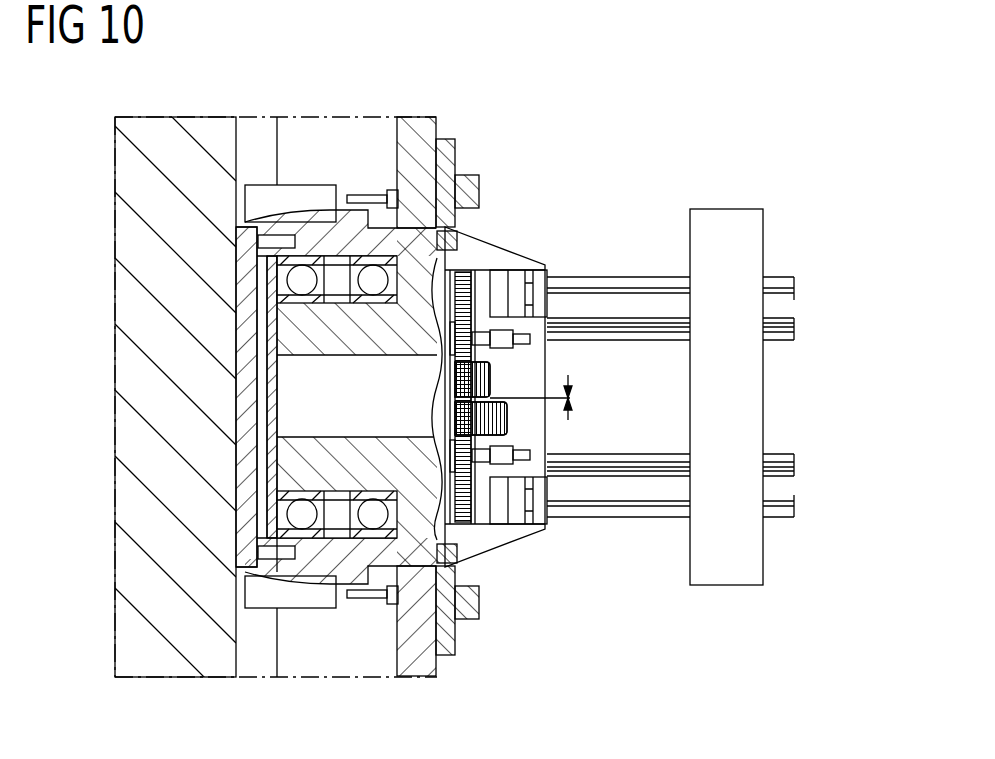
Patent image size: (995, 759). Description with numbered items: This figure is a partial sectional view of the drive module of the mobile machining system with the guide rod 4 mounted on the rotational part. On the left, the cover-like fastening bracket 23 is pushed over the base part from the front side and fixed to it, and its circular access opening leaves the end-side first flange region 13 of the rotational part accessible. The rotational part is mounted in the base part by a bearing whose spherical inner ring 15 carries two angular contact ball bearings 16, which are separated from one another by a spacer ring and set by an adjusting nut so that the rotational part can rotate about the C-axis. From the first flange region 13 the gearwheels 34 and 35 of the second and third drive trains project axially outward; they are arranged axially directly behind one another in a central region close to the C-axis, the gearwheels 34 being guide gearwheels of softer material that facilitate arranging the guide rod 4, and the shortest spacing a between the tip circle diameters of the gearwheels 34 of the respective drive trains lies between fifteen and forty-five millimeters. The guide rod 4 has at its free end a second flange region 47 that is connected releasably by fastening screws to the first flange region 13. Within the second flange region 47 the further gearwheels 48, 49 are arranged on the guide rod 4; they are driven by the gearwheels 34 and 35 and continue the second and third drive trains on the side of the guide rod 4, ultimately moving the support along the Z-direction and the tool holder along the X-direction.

The guide rod 4 is at (648, 306).
The first flange region 13 is at (440, 246).
The spherical inner ring 15 is at (318, 572).
The angular contact ball bearings 16 is at (307, 262).
The fastening bracket 23 is at (130, 297).
The gearwheels 34 is at (483, 378).
The gearwheels 35 is at (462, 418).
The second flange region 47 is at (440, 553).
The further gearwheels 48 is at (465, 338).
The further gearwheels 49 is at (465, 293).
The shortest spacing a is at (572, 397).